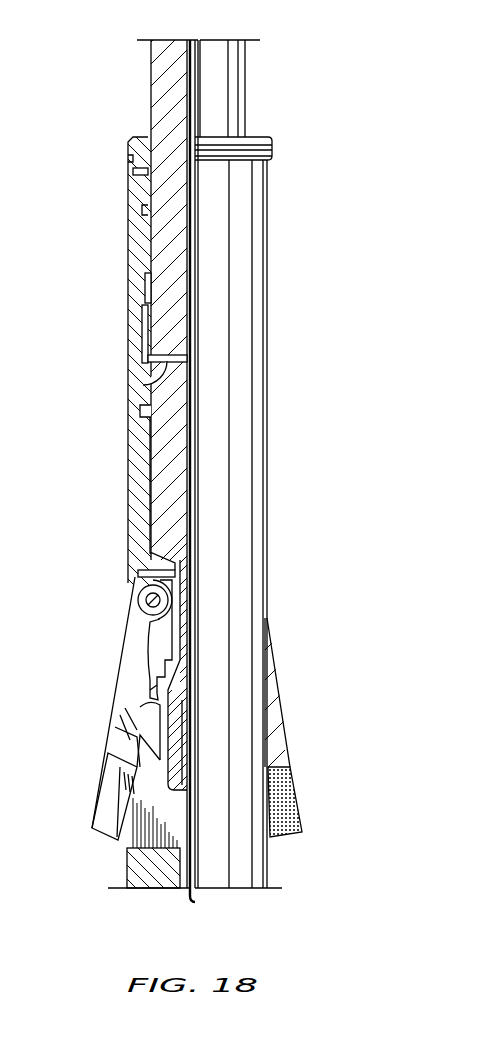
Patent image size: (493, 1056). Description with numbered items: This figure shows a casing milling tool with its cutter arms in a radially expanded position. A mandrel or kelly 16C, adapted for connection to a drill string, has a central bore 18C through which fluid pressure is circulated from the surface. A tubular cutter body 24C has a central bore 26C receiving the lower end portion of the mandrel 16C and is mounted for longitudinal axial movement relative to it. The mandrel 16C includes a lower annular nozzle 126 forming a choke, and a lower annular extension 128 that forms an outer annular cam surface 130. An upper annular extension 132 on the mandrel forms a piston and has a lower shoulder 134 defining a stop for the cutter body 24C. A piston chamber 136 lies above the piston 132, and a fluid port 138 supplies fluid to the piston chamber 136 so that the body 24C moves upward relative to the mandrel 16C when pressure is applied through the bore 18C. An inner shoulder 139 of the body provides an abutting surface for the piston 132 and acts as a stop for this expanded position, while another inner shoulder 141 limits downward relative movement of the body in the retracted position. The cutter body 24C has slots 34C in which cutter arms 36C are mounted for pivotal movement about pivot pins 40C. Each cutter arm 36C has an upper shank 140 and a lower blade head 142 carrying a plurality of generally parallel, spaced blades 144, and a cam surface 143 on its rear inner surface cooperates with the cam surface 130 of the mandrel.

The mandrel 16C is at (158, 100).
The central bore 18C is at (188, 80).
The tubular cutter body 24C is at (236, 268).
The central bore 26C is at (152, 495).
The inner shoulder 141 is at (143, 315).
The piston chamber 136 is at (145, 343).
The upper annular extension 132 is at (142, 373).
The fluid port 138 is at (148, 389).
The inner shoulder 139 is at (143, 405).
The lower shoulder 134 is at (140, 433).
The pivot pin 40C is at (146, 600).
The upper shank 140 is at (138, 632).
The slot 34C is at (157, 643).
The lower annular extension 128 is at (155, 687).
The outer annular cam surface 130 is at (158, 697).
The cam surface 143 is at (145, 710).
The cutter arm 36C is at (112, 753).
The lower blade head 142 is at (108, 790).
The blade 144 is at (102, 818).
The lower annular nozzle 126 is at (193, 783).